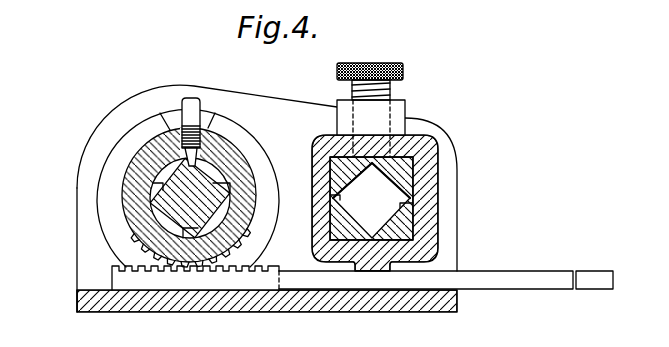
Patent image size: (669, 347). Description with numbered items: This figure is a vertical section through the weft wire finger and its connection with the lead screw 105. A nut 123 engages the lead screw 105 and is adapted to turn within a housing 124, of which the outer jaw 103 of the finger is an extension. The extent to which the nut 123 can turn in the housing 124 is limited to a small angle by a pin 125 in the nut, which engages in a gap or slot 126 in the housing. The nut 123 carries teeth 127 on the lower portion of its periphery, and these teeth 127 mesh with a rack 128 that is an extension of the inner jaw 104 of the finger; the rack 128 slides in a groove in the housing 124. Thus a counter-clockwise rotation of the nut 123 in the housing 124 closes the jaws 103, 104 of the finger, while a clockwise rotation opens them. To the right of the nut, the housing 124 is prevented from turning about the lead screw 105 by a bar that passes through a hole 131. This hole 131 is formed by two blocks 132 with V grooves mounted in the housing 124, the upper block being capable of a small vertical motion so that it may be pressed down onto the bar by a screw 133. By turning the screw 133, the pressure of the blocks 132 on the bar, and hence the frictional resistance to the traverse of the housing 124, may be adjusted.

The outer jaw 103 is at (589, 273).
The inner jaw 104 is at (557, 278).
The lead screw 105 is at (128, 176).
The nut 123 is at (141, 177).
The housing 124 is at (267, 198).
The pin 125 is at (191, 98).
The gap or slot 126 is at (207, 117).
The teeth 127 is at (142, 253).
The rack 128 is at (163, 272).
The hole 131 is at (406, 153).
The blocks 132 is at (405, 212).
The screw 133 is at (384, 64).